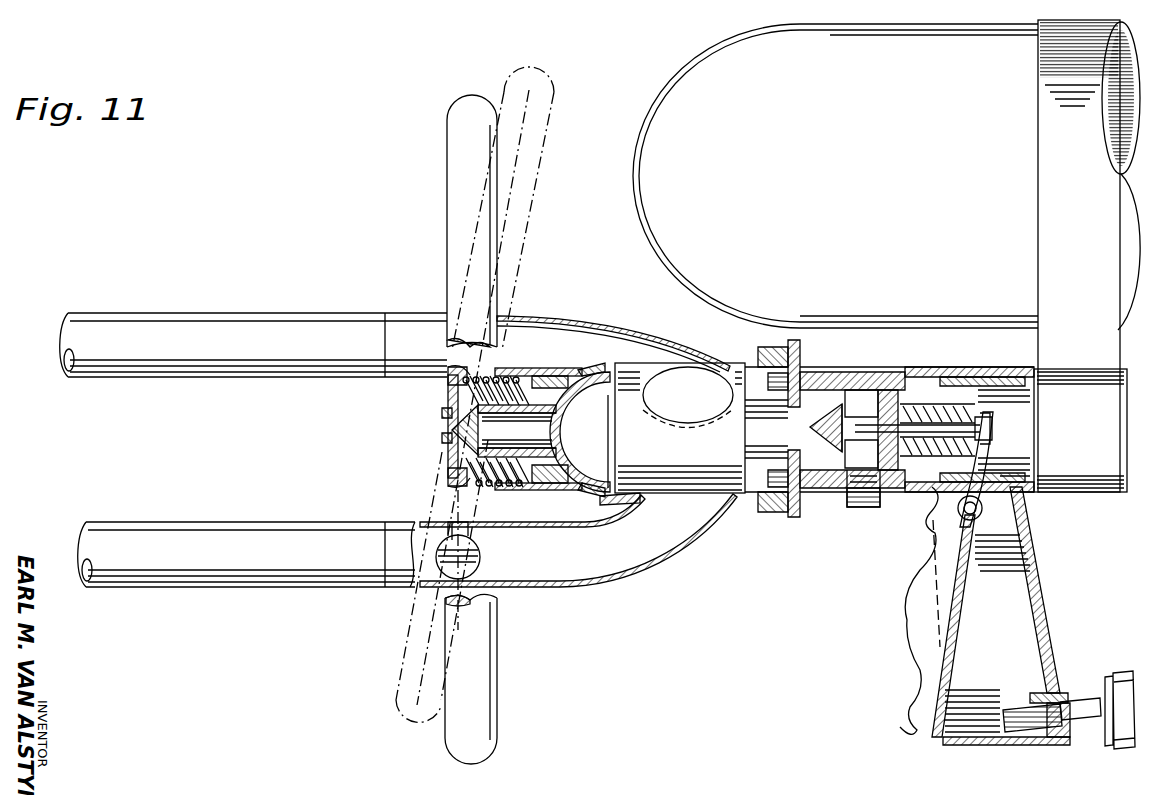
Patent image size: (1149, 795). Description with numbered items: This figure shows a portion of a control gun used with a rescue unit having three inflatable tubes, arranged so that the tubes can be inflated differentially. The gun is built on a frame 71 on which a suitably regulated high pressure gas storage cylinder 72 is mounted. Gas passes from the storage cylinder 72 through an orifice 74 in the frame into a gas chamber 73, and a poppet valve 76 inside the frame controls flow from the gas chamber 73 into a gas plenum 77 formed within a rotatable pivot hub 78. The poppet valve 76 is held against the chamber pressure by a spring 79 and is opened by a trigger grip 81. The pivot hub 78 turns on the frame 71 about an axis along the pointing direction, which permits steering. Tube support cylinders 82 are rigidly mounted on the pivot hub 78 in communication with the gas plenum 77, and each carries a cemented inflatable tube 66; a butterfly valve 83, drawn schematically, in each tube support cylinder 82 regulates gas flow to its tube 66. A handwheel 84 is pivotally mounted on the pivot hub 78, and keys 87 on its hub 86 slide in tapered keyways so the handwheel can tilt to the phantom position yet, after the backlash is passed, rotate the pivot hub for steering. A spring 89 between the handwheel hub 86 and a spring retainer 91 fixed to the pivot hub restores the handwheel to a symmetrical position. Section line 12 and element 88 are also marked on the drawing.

The section line 12 is at (465, 503).
The inflatable tube 66 is at (207, 365).
The frame 71 is at (908, 367).
The high pressure gas storage cylinder 72 is at (886, 256).
The gas chamber 73 is at (892, 490).
The orifice 74 is at (866, 508).
The poppet valve 76 is at (830, 490).
The gas plenum 77 is at (638, 441).
The pivot hub 78 is at (716, 368).
The spring 79 is at (984, 466).
The trigger grip 81 is at (915, 637).
The tube support cylinder 82 is at (578, 318).
The butterfly valve 83 is at (480, 560).
The handwheel 84 is at (529, 80).
The hub of the handwheel 86 is at (532, 374).
The keys 87 is at (566, 404).
The nozzle block 88 is at (597, 370).
The spring 89 is at (487, 480).
The spring retainer 91 is at (446, 392).